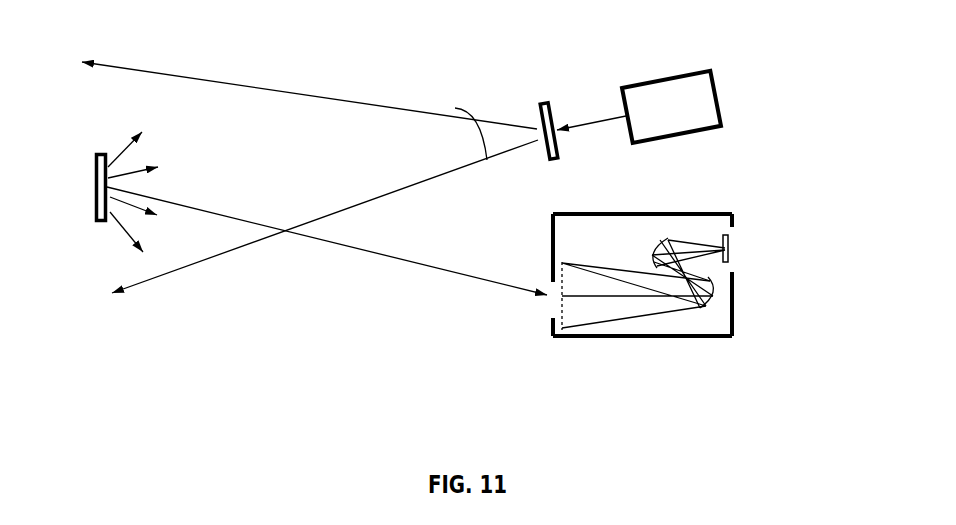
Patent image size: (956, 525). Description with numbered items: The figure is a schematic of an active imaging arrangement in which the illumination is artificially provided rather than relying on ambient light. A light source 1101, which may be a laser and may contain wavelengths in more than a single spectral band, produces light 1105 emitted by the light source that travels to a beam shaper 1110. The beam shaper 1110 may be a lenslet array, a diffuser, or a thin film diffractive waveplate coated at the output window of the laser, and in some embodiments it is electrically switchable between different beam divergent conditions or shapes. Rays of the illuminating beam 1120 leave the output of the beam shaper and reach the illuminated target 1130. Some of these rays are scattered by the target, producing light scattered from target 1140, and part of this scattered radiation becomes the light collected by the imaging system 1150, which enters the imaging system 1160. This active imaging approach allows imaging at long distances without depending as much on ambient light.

The light source 1101 is at (675, 92).
The light emitted by the light source 1105 is at (588, 132).
The beam shaper 1110 is at (542, 100).
The illuminating beam 1120 is at (377, 104).
The illuminated target 1130 is at (98, 187).
The light scattered from target 1140 is at (135, 150).
The light collected by the imaging system 1150 is at (355, 252).
The imaging system 1160 is at (734, 285).